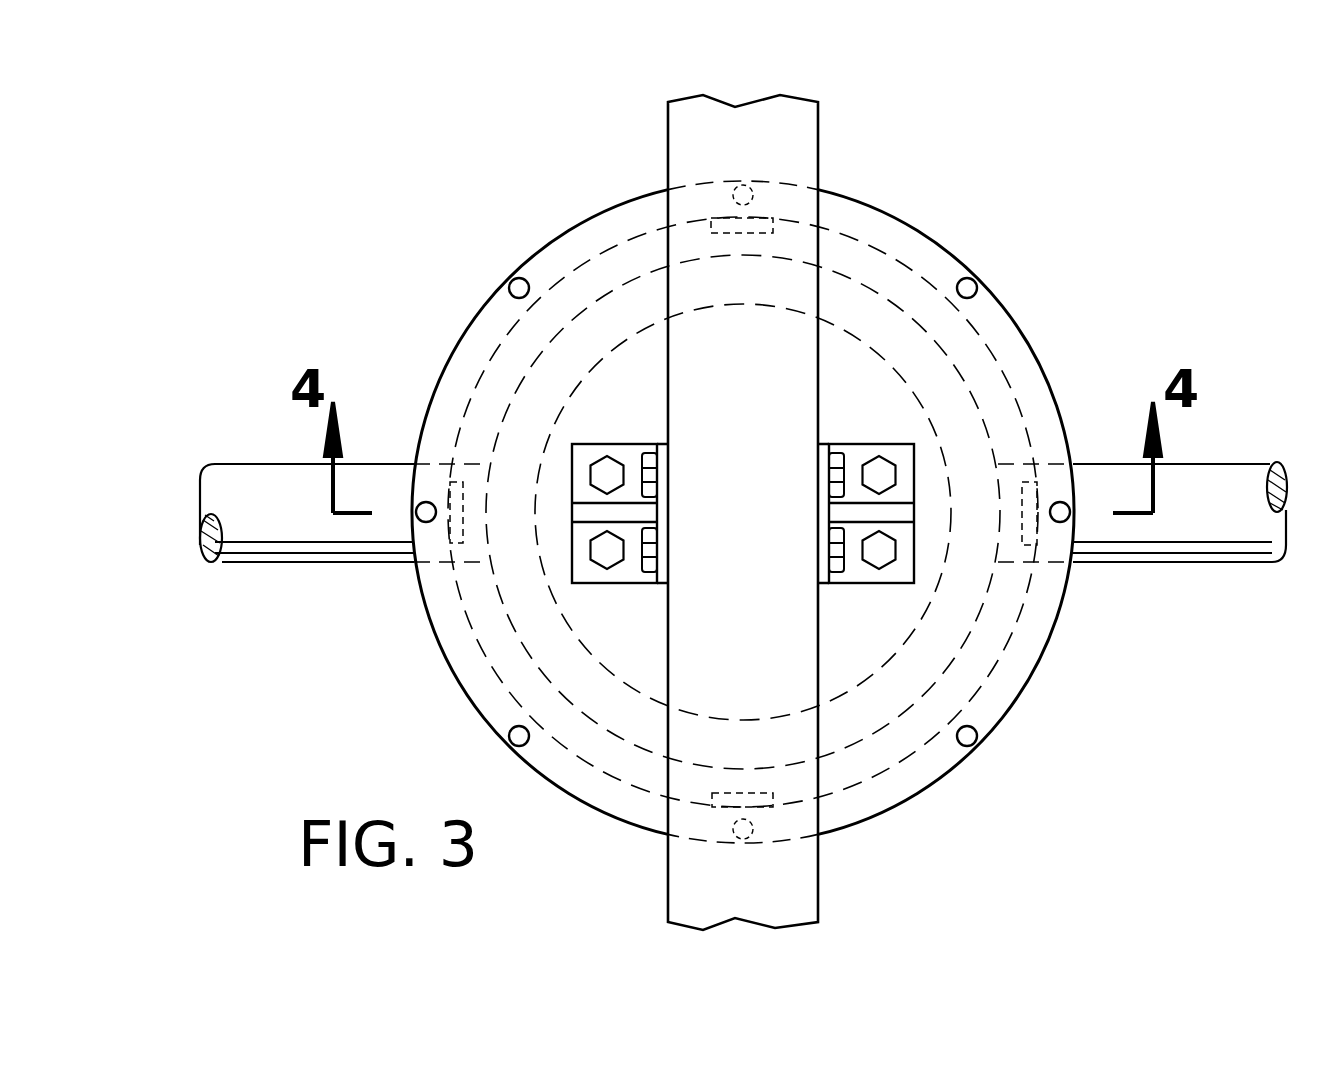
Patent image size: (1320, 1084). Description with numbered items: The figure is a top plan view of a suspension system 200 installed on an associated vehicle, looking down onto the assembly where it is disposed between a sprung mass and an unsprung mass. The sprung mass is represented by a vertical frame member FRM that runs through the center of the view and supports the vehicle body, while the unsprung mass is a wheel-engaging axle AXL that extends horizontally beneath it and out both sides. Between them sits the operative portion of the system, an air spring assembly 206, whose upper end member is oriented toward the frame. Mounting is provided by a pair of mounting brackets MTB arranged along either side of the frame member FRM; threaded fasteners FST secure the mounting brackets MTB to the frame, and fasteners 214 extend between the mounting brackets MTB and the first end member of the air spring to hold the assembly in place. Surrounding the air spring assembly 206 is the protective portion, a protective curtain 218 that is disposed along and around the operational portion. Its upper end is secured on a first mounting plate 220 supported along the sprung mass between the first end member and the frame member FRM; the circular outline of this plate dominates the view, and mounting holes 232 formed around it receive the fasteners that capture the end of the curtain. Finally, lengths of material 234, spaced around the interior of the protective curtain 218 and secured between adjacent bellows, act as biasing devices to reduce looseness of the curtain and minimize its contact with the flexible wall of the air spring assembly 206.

The suspension system 200 is at (1012, 198).
The air spring assembly 206 is at (488, 594).
The fasteners 214 is at (608, 472).
The protective curtain 218 is at (1000, 306).
The first mounting plate 220 is at (578, 223).
The mounting holes 232 is at (508, 735).
The lengths of material 234 is at (1032, 523).
The frame member FRM is at (818, 112).
The axle AXL is at (258, 481).
The mounting brackets MTB is at (574, 453).
The fasteners FST is at (836, 456).